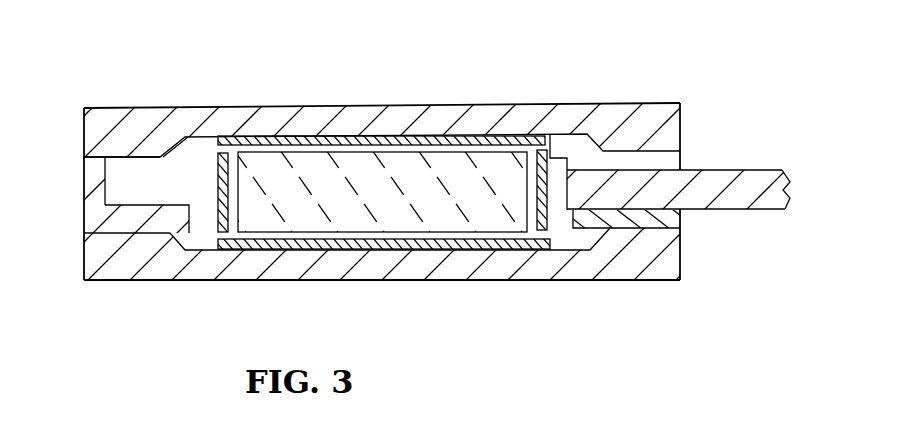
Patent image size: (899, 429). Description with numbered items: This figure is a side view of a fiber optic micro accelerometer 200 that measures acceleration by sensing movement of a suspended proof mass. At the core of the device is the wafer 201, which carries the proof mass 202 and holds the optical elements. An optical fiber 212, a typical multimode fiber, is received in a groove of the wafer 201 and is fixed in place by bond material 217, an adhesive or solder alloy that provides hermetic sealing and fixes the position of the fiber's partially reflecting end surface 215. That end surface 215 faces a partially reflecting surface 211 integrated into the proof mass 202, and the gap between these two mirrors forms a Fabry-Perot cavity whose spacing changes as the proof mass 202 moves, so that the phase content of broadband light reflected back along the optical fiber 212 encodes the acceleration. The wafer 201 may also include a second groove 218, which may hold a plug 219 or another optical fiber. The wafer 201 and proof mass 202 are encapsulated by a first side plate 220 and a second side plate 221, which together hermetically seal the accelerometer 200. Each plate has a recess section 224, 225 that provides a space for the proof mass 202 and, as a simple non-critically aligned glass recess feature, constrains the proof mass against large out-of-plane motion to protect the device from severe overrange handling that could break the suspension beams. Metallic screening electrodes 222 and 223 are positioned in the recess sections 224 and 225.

The fiber optic micro accelerometer 200 is at (186, 44).
The wafer 201 is at (150, 220).
The proof mass 202 is at (397, 211).
The partially reflecting surface 211 is at (556, 156).
The optical fiber 212 is at (750, 170).
The partially reflecting end surface 215 is at (572, 193).
The bond material 217 is at (695, 168).
The second groove 218 is at (139, 155).
The plug 219 is at (85, 212).
The first side plate 220 is at (456, 105).
The second side plate 221 is at (456, 282).
The metallic screening electrode 222 is at (352, 135).
The metallic screening electrode 223 is at (388, 252).
The recess section 224 is at (202, 150).
The recess section 225 is at (203, 240).